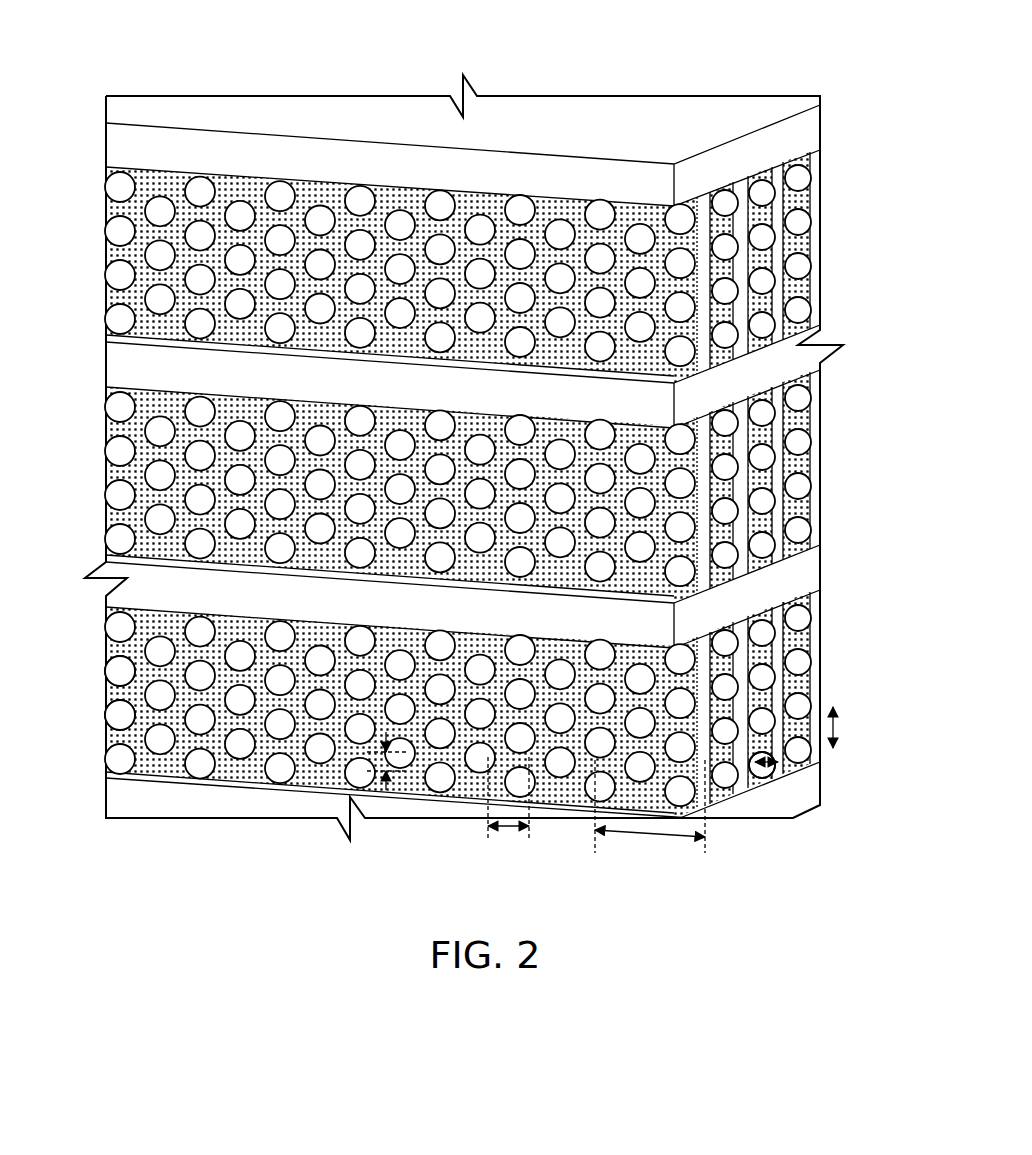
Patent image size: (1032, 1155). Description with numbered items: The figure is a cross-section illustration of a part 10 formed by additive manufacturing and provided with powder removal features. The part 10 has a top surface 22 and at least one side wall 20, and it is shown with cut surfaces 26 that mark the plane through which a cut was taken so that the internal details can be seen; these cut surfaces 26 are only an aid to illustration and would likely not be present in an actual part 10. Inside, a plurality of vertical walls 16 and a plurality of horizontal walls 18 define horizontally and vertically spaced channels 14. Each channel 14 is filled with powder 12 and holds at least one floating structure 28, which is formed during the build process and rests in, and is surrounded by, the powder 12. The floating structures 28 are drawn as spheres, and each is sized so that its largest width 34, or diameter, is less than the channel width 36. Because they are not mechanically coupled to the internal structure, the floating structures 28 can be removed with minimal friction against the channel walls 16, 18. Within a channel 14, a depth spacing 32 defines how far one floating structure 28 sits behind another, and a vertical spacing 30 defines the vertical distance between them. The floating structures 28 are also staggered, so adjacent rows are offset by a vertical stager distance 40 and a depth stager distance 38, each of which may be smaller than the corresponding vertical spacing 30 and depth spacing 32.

The part 10 is at (237, 60).
The powder 12 is at (118, 256).
The channels 14 is at (800, 292).
The vertical walls 16 is at (810, 498).
The horizontal walls 18 is at (812, 350).
The side wall 20 is at (828, 608).
The top surface 22 is at (678, 108).
The cut surfaces 26 is at (118, 368).
The floating structure 28 is at (127, 712).
The vertical spacing 30 is at (840, 726).
The depth spacing 32 is at (648, 842).
The largest width 34 is at (792, 777).
The channel width 36 is at (765, 695).
The depth stager distance 38 is at (505, 835).
The vertical stager distance 40 is at (397, 772).